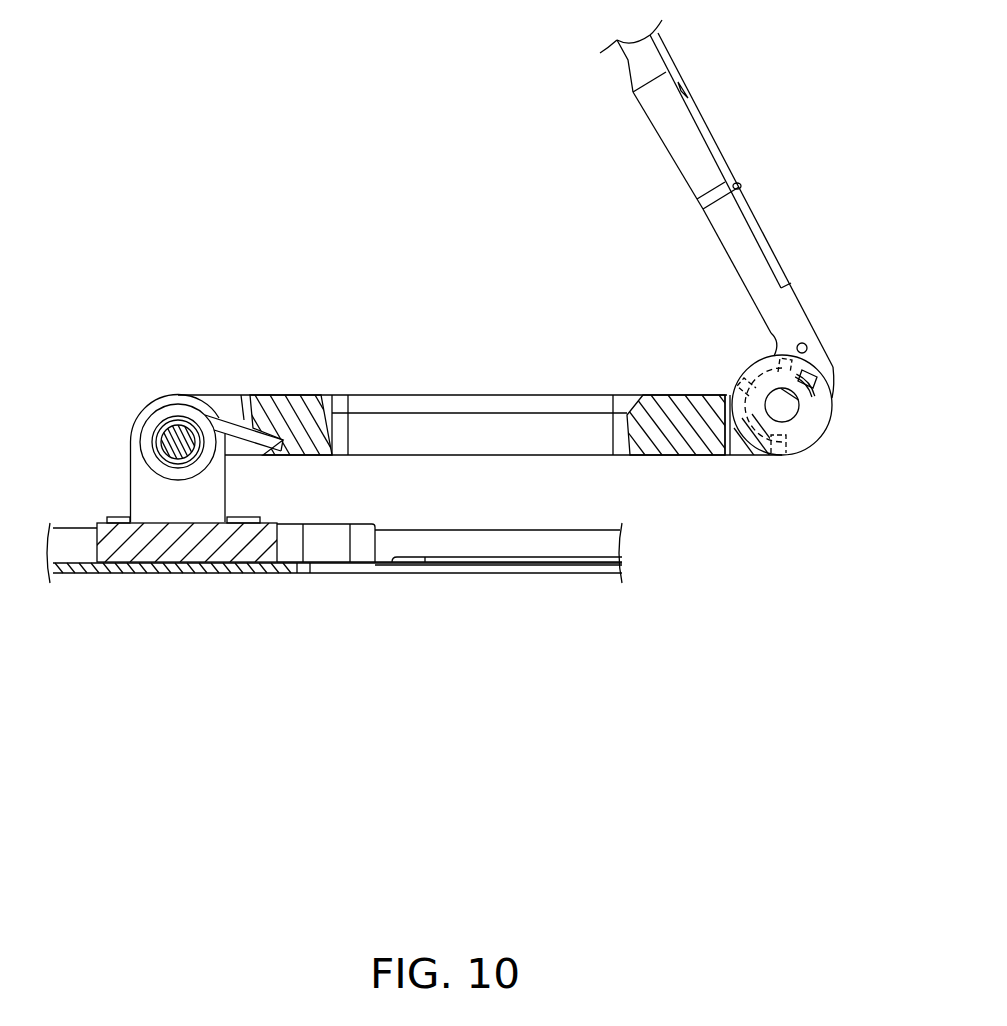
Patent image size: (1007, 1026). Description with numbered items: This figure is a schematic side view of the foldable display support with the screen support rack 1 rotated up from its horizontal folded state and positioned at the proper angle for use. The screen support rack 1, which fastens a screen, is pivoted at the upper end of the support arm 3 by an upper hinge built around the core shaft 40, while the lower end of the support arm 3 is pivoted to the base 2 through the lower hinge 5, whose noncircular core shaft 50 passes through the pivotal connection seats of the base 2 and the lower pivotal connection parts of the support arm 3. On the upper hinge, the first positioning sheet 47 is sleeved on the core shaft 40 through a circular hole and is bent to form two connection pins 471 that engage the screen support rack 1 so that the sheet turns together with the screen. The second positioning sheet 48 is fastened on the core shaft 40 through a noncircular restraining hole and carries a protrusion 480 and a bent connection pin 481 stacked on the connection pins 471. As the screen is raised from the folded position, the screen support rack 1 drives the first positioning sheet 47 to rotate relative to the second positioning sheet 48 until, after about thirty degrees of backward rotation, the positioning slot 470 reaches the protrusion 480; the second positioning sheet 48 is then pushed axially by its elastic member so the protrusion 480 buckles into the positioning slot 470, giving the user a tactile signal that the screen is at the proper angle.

The screen support rack 1 is at (678, 138).
The base 2 is at (455, 545).
The support arm 3 is at (466, 402).
The lower hinge 5 is at (162, 422).
The core shaft 50 is at (168, 458).
The core shaft 40 is at (785, 410).
The first positioning sheet 47 is at (735, 390).
The second positioning sheet 48 is at (818, 433).
The positioning slot 470 is at (790, 352).
The connection pins 471 is at (742, 382).
The protrusion 480 is at (813, 375).
The connection pin 481 is at (738, 440).